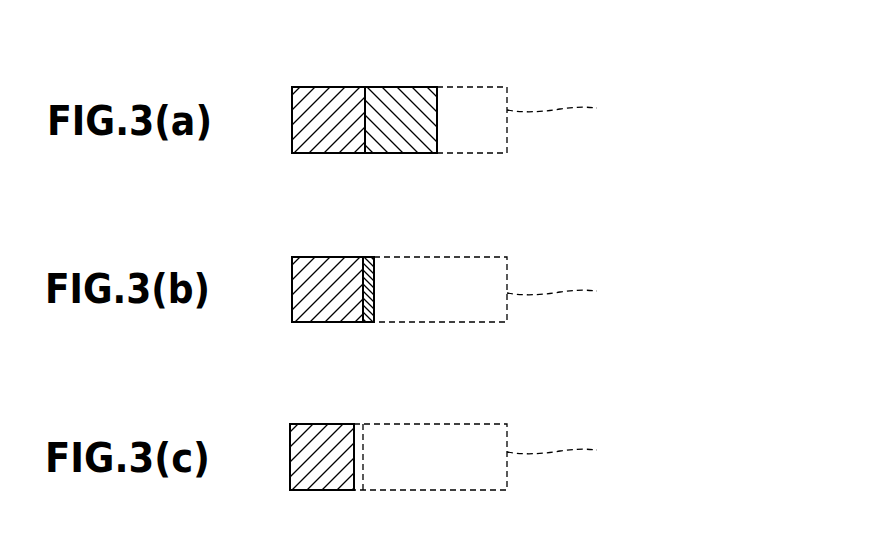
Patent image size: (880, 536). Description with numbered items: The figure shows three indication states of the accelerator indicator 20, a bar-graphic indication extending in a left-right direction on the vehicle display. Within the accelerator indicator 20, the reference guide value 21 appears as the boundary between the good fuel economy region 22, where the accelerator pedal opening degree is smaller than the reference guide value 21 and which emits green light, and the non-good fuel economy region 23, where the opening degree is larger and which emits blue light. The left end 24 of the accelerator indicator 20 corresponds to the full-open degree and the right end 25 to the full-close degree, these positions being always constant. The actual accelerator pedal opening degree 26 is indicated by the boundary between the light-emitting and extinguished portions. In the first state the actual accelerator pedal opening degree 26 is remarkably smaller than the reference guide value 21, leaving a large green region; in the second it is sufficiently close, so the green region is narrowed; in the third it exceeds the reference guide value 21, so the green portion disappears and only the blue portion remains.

In FIG. 3A, the accelerator indicator 20 is at (509, 76).
In FIG. 3B, the accelerator indicator 20 is at (440, 289).
In FIG. 3C, the accelerator indicator 20 is at (430, 457).
In FIG. 3A, the reference guide value 21 is at (366, 118).
In FIG. 3B, the reference guide value 21 is at (362, 290).
In FIG. 3C, the reference guide value 21 is at (363, 468).
In FIG. 3A, the good fuel economy region 22 is at (415, 88).
In FIG. 3B, the good fuel economy region 22 is at (368, 282).
In FIG. 3A, the non-good fuel economy region 23 is at (322, 88).
In FIG. 3B, the non-good fuel economy region 23 is at (316, 263).
In FIG. 3C, the non-good fuel economy region 23 is at (318, 490).
In FIG. 3A, the left end 24 is at (292, 97).
In FIG. 3B, the left end 24 is at (292, 288).
In FIG. 3C, the left end 24 is at (290, 462).
In FIG. 3A, the right end 25 is at (567, 108).
In FIG. 3B, the right end 25 is at (567, 294).
In FIG. 3C, the right end 25 is at (567, 452).
In FIG. 3A, the actual accelerator pedal opening degree 26 is at (437, 123).
In FIG. 3B, the actual accelerator pedal opening degree 26 is at (375, 298).
In FIG. 3C, the actual accelerator pedal opening degree 26 is at (355, 443).